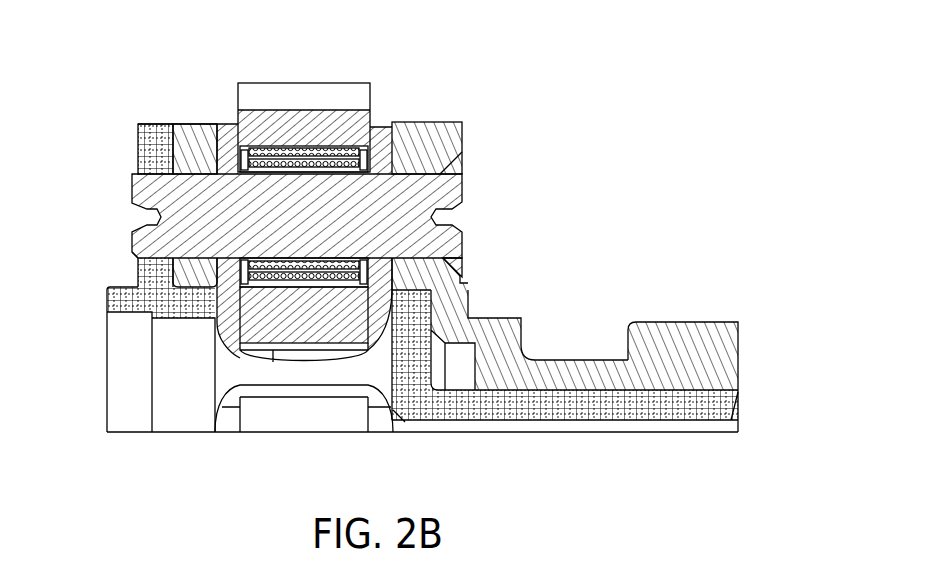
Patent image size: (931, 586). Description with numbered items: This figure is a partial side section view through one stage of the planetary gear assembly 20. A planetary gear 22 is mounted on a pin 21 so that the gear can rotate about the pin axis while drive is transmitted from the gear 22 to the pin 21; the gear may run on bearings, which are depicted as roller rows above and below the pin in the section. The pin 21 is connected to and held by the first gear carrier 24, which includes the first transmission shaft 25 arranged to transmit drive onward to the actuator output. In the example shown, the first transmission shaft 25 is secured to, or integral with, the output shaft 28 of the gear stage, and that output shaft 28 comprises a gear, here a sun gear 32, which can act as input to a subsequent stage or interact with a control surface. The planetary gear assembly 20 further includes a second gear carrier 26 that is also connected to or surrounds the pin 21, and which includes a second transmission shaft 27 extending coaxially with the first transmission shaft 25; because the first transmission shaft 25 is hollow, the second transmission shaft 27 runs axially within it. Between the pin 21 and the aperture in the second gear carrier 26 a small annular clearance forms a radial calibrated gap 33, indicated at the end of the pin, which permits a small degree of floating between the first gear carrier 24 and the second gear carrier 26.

The planetary gear assembly 20 is at (528, 82).
The pin 21 is at (134, 190).
The planetary gear 22 is at (319, 103).
The first gear carrier 24 is at (443, 122).
The first transmission shaft 25 is at (464, 232).
The second gear carrier 26 is at (151, 132).
The second transmission shaft 27 is at (508, 431).
The output shaft 28 is at (738, 232).
The sun gear 32 is at (680, 334).
The calibrated gap 33 is at (110, 259).